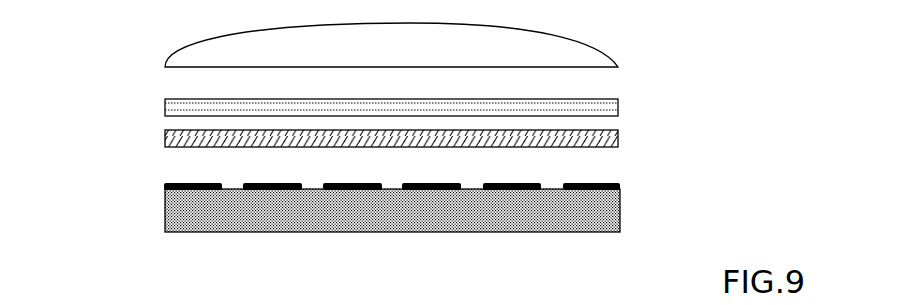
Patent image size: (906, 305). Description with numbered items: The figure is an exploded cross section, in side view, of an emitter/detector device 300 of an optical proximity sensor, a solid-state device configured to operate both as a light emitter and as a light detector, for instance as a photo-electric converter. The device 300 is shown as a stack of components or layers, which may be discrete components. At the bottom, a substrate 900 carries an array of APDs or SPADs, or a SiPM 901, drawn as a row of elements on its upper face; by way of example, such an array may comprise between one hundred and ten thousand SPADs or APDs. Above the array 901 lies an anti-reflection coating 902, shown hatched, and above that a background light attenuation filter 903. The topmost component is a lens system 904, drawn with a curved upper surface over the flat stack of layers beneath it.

The emitter/detector device 300 is at (118, 112).
The substrate 900 is at (175, 221).
The array of APDs or SPADs, or SiPM 901 is at (242, 178).
The anti-reflection coating 902 is at (618, 140).
The background light filter 903 is at (618, 107).
The lens system 904 is at (592, 54).